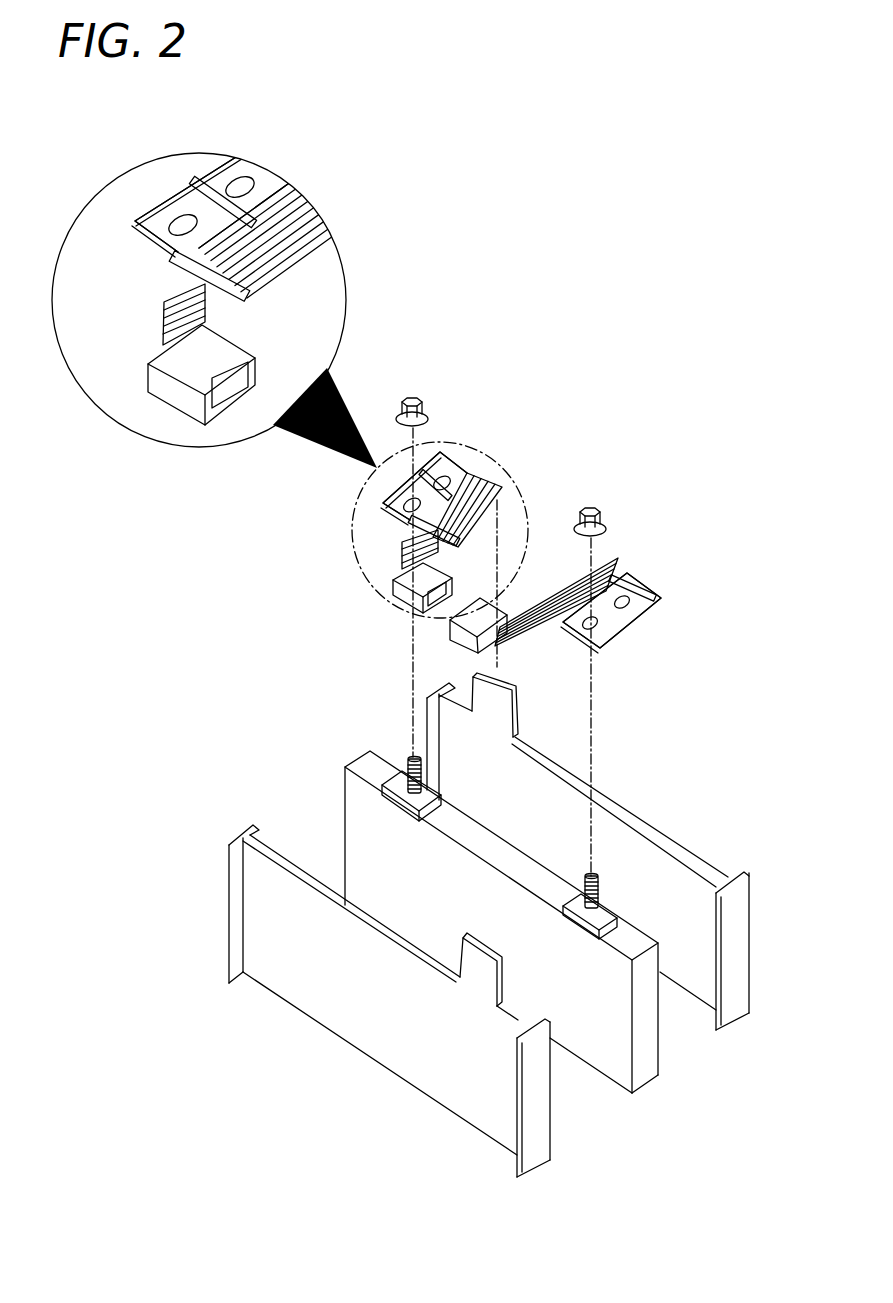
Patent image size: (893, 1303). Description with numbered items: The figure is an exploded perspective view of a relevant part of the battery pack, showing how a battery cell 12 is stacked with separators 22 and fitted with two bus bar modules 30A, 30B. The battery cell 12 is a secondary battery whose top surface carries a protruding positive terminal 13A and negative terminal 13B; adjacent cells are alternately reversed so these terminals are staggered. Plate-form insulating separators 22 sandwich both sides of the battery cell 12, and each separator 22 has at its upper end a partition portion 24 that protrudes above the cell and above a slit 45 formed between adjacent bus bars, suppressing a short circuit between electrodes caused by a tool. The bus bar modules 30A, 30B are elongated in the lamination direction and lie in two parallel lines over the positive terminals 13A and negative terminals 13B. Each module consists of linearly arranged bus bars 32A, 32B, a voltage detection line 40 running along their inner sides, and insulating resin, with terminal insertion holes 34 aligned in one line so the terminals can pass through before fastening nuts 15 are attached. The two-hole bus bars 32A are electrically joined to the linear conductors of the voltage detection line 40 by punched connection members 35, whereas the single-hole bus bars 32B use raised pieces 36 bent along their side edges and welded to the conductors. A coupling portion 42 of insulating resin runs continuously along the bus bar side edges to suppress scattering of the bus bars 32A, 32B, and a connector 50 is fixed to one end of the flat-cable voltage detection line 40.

The battery cell 12 is at (664, 1035).
The positive terminal 13A is at (410, 757).
The negative terminal 13B is at (600, 877).
The fastening nut 15 is at (415, 400).
The separator 22 is at (742, 916).
The partition portion 24 is at (512, 688).
The bus bar module 30A is at (301, 285).
The bus bar module 30B is at (572, 559).
The bus bar 32A is at (268, 176).
The bus bar 32B is at (152, 227).
The terminal insertion hole 34 is at (180, 220).
The connection member 35 is at (500, 493).
The raised piece 36 is at (194, 276).
The voltage detection line 40 is at (316, 257).
The coupling portion 42 is at (136, 214).
The slit 45 is at (206, 185).
The connector 50 is at (170, 362).